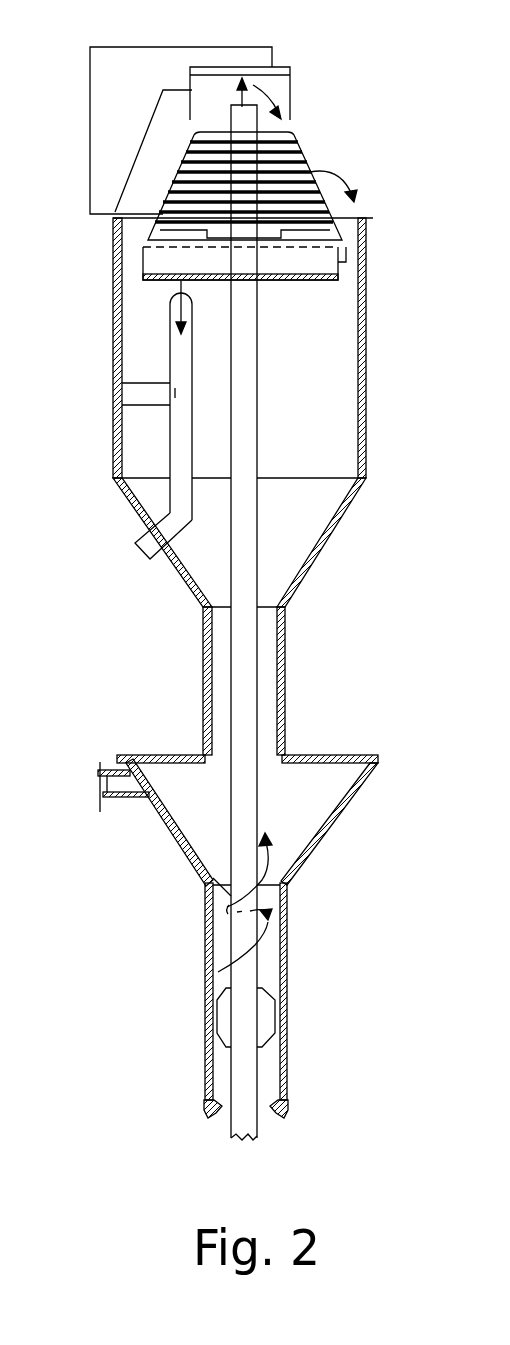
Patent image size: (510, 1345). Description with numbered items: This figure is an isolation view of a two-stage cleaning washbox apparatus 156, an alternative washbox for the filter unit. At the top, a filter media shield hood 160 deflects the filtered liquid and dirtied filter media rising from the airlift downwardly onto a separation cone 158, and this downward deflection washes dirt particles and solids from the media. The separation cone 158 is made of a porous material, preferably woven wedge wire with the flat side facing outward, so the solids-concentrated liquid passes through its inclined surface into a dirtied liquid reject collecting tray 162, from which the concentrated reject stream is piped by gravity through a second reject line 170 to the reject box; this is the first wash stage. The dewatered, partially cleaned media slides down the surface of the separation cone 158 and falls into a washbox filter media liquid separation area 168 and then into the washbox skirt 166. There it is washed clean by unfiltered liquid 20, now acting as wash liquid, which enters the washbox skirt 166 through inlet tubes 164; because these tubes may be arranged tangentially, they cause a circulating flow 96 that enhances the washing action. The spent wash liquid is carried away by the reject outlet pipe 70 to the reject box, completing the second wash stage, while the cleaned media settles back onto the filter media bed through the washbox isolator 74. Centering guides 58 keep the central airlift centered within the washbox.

The unfiltered liquid 20 is at (211, 1132).
The centering guides 58 is at (217, 990).
The reject outlet pipe 70 is at (104, 800).
The washbox isolator 74 is at (205, 1108).
The circulating flow 96 is at (277, 953).
The two-stage cleaning washbox apparatus 156 is at (335, 126).
The separation cone 158 is at (297, 160).
The filter media shield hood 160 is at (293, 92).
The dirtied liquid reject collecting tray 162 is at (337, 262).
The inlet tubes 164 is at (287, 1103).
The washbox skirt 166 is at (287, 997).
The washbox filter media liquid separation area 168 is at (327, 778).
The second reject line 170 is at (146, 558).